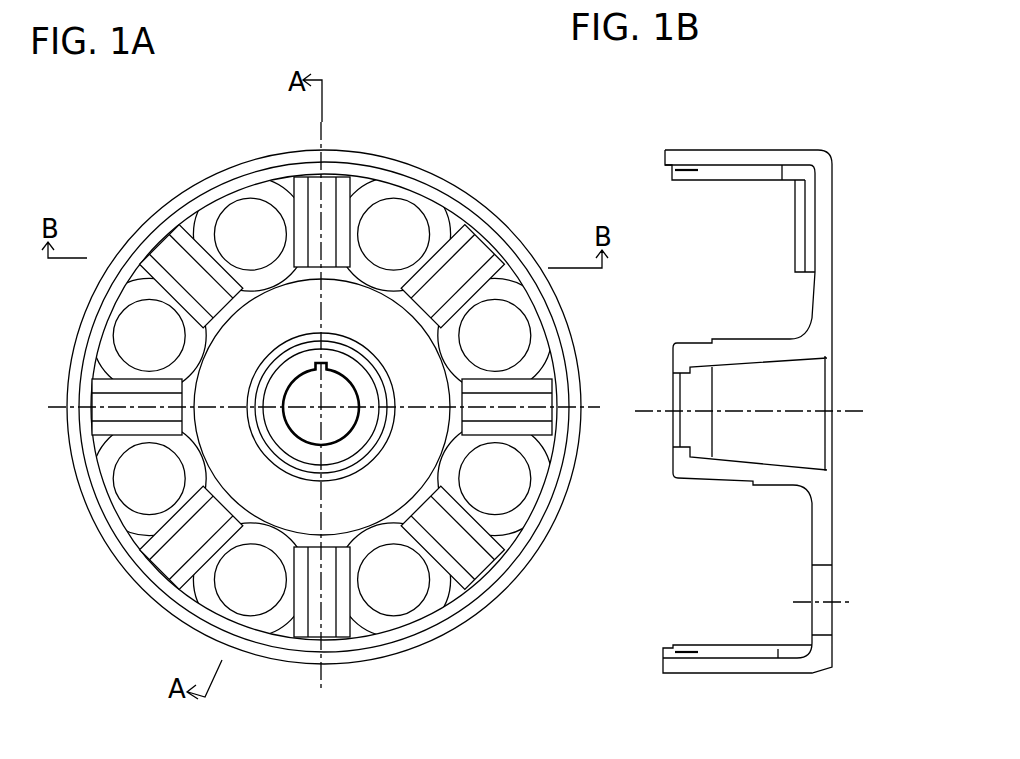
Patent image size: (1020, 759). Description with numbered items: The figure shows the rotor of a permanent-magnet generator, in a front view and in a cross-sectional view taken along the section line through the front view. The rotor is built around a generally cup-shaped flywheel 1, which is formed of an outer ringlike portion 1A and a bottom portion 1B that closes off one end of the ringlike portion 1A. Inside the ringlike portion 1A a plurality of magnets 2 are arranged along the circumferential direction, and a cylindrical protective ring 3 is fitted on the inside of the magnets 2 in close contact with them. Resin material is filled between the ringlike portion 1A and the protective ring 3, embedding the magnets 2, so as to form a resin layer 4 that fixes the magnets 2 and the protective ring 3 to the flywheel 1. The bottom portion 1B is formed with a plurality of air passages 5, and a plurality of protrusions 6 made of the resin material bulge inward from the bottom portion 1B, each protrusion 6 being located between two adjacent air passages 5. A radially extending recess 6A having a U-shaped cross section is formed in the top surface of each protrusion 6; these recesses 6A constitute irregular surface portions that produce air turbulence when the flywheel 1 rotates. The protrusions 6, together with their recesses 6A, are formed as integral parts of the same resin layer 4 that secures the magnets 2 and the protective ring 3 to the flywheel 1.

In FIG. 1A, the flywheel 1 is at (530, 558).
In FIG. 1B, the flywheel 1 is at (763, 152).
In FIG. 1A, the ringlike portion 1A is at (487, 602).
In FIG. 1B, the ringlike portion 1A is at (793, 162).
In FIG. 1B, the bottom portion 1B is at (822, 290).
In FIG. 1B, the magnets 2 is at (738, 165).
In FIG. 1A, the protective ring 3 is at (390, 633).
In FIG. 1B, the protective ring 3 is at (713, 178).
In FIG. 1A, the resin layer 4 is at (435, 622).
In FIG. 1B, the resin layer 4 is at (668, 172).
In FIG. 1A, the air passages 5 is at (322, 407).
In FIG. 1B, the air passages 5 is at (820, 583).
In FIG. 1A, the protrusions 6 is at (370, 175).
In FIG. 1B, the protrusions 6 is at (810, 223).
In FIG. 1A, the recess 6A is at (327, 187).